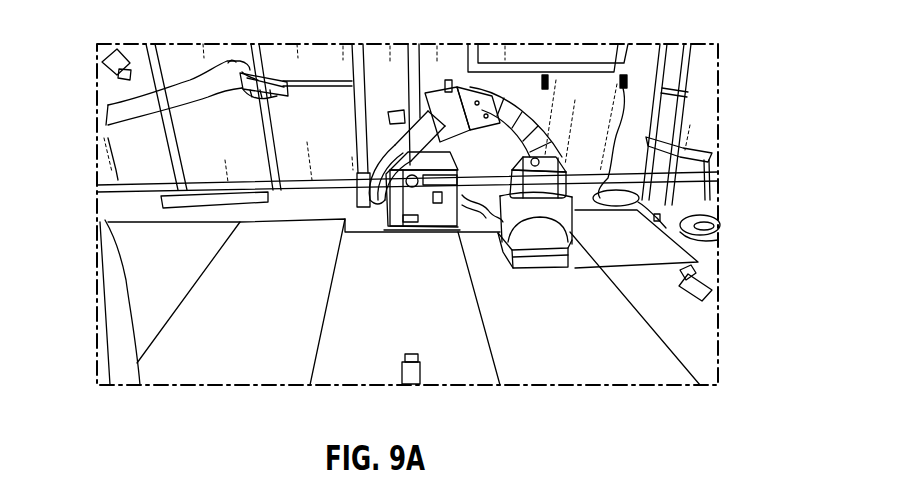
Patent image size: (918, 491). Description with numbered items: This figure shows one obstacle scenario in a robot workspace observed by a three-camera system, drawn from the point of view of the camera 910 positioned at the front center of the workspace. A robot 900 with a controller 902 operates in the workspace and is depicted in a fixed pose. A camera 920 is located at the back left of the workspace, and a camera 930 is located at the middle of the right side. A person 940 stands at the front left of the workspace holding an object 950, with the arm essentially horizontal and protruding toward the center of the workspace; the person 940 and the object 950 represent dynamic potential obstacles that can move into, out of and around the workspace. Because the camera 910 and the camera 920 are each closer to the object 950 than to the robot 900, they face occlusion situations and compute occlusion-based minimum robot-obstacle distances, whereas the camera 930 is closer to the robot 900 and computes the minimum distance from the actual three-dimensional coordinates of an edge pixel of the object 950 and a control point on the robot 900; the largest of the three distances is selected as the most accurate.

The robot 900 is at (543, 272).
The controller 902 is at (408, 237).
The camera 910 is at (423, 372).
The camera 920 is at (109, 73).
The camera 930 is at (712, 297).
The person 940 is at (142, 306).
The object 950 is at (276, 72).